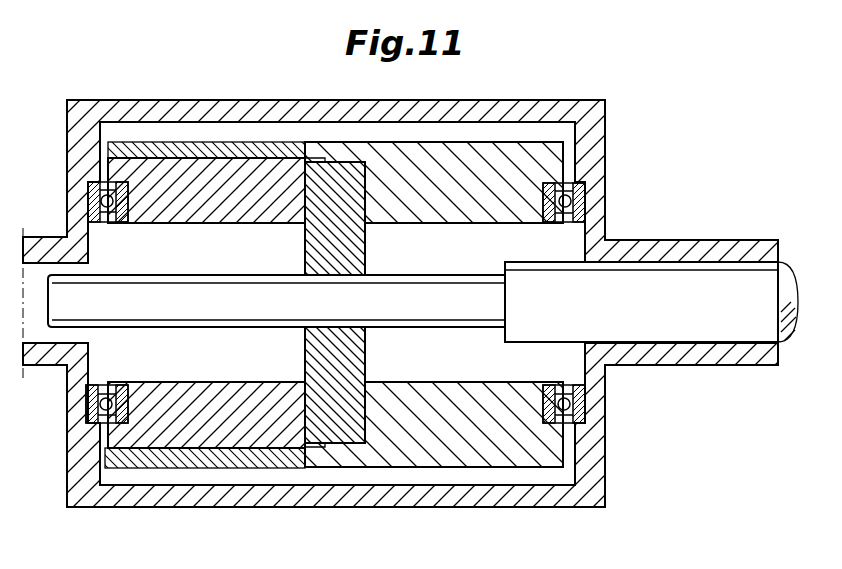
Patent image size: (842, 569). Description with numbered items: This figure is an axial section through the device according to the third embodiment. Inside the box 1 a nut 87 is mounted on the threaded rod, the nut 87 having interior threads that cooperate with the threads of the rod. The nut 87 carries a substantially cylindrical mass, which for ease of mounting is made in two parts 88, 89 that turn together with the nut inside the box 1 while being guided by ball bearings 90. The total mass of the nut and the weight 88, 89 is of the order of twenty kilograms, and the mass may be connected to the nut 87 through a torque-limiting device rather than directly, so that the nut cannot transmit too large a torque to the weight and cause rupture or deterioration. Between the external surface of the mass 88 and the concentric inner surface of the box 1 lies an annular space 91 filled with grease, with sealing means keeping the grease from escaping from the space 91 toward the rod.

The box 1 is at (498, 105).
The nut 87 is at (366, 256).
The cylindrical mass part 88 is at (490, 448).
The cylindrical mass part 89 is at (247, 432).
The ball bearings 90 is at (98, 405).
The annular space 91 is at (375, 477).